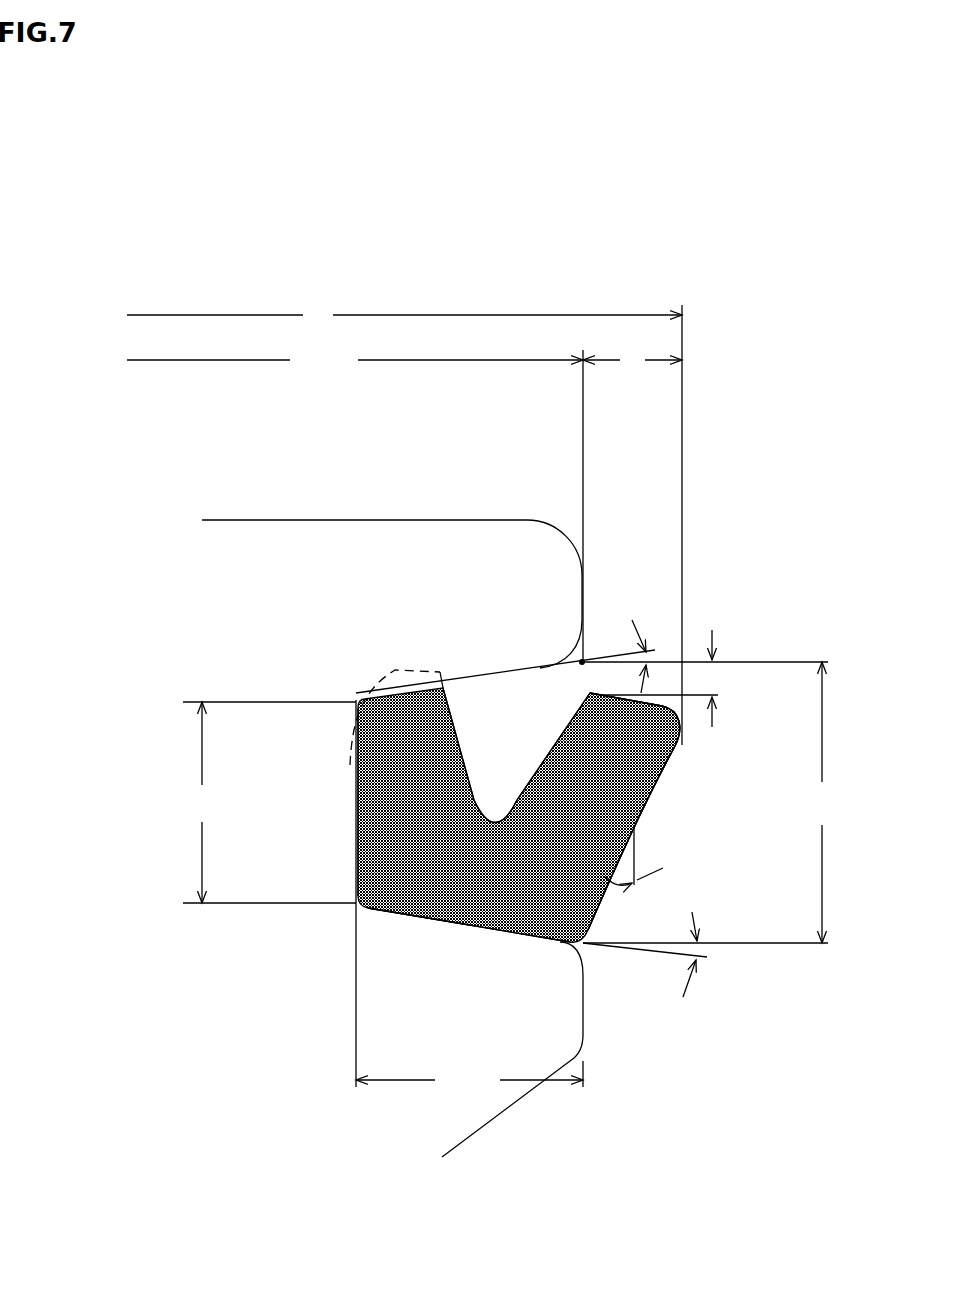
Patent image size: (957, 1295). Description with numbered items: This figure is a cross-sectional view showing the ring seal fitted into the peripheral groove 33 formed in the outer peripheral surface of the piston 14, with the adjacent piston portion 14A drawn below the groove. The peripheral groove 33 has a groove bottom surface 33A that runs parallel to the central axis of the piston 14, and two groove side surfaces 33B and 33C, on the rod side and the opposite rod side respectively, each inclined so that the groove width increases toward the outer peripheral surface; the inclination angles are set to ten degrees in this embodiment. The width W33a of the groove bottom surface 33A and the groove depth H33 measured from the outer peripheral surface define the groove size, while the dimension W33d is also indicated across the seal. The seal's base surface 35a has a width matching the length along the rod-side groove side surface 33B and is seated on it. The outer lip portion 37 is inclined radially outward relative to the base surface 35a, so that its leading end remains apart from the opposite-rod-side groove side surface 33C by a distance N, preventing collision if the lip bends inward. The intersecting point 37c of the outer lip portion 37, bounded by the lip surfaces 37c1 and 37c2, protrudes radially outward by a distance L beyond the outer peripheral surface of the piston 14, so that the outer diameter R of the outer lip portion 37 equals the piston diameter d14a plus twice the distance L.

The piston 14 is at (365, 508).
The second housing member 14A is at (584, 1003).
The peripheral groove 33 is at (492, 770).
The groove bottom surface 33A is at (378, 888).
The groove side surface 33B is at (463, 918).
The groove side surface 33C is at (475, 700).
The base surface 35a is at (417, 915).
The outer lip portion 37 is at (648, 812).
The intersecting point 37c is at (680, 745).
The lip outer inclined surface 37c1 is at (670, 778).
The lip top surface 37c2 is at (668, 716).
The outer diameter R is at (404, 522).
The diameter d14a is at (355, 503).
The distance L is at (632, 359).
The distance N is at (668, 678).
The width W33a is at (257, 802).
The seal ring width at lip side W33d is at (724, 802).
The groove depth H33 is at (469, 1079).